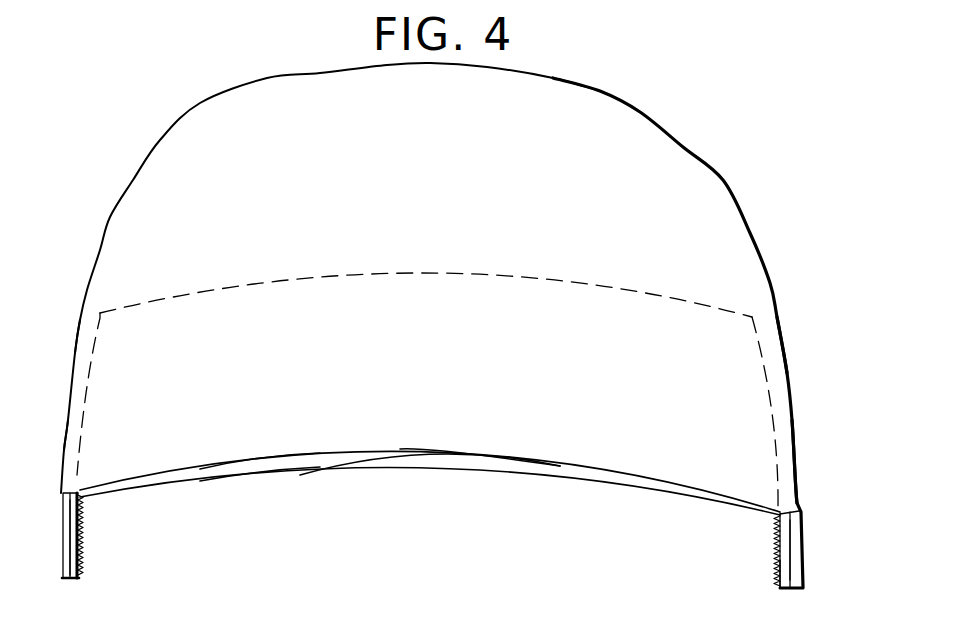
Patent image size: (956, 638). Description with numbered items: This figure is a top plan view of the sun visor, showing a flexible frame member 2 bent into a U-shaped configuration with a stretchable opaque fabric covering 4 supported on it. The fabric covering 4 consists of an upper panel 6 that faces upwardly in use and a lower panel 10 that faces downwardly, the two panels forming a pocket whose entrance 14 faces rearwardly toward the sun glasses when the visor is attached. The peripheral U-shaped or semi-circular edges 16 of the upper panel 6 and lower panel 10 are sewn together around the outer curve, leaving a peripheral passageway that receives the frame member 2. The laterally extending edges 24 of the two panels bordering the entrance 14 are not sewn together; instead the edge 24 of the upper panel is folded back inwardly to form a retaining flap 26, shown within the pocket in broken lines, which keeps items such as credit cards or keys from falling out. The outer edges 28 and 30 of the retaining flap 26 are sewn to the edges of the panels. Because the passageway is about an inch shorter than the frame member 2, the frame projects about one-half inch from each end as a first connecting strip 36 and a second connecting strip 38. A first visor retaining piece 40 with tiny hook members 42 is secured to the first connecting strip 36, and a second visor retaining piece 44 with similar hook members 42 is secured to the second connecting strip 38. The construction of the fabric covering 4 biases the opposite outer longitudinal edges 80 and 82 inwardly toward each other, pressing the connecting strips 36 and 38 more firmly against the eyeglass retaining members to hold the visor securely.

The flexible frame member 2 is at (802, 541).
The stretchable opaque fabric covering 4 is at (131, 255).
The upper panel 6 is at (417, 449).
The lower panel 10 is at (442, 470).
The entrance 14 is at (560, 465).
The peripheral U-shaped or semi-circular edges 16 is at (548, 78).
The laterally extending edges 24 is at (265, 459).
The retaining flap 26 is at (577, 311).
The outer edge of retaining flap 28 is at (76, 467).
The outer edge of retaining flap 30 is at (777, 478).
The first connecting strip 36 is at (60, 530).
The second connecting strip 38 is at (803, 573).
The first visor retaining piece 40 is at (73, 547).
The tiny hook members 42 is at (83, 558).
The second visor retaining piece 44 is at (777, 585).
The outer longitudinal edge 80 is at (73, 353).
The outer longitudinal edge 82 is at (793, 337).